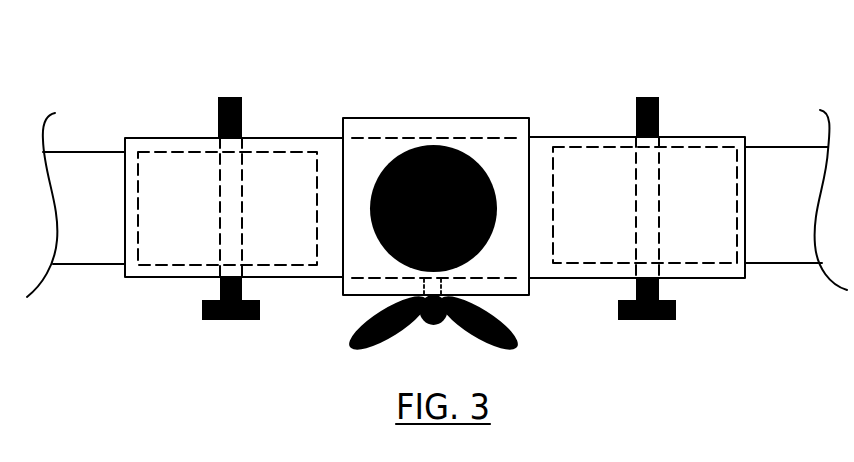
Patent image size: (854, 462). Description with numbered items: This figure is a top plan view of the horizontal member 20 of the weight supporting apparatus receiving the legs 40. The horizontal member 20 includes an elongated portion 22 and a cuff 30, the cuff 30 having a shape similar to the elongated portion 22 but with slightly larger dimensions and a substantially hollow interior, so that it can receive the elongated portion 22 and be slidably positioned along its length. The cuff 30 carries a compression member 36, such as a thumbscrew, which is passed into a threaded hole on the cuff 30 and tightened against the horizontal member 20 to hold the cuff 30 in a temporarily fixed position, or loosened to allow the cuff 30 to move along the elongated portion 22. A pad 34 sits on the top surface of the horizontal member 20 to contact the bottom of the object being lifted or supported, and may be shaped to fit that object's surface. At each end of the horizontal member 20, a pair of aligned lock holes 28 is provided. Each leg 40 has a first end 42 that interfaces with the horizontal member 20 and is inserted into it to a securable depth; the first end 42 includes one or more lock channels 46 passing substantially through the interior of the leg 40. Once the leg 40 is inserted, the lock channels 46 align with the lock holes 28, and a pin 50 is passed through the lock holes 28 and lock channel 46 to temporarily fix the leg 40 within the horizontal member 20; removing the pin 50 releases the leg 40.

The horizontal member 20 is at (423, 85).
The elongated portion 22 is at (329, 268).
The lock hole 28 is at (218, 138).
The cuff 30 is at (495, 125).
The pad 34 is at (472, 150).
The compression member 36 is at (505, 322).
The leg 40 is at (110, 241).
The first end 42 is at (58, 173).
The lock channel 46 is at (238, 203).
The pin 50 is at (243, 110).